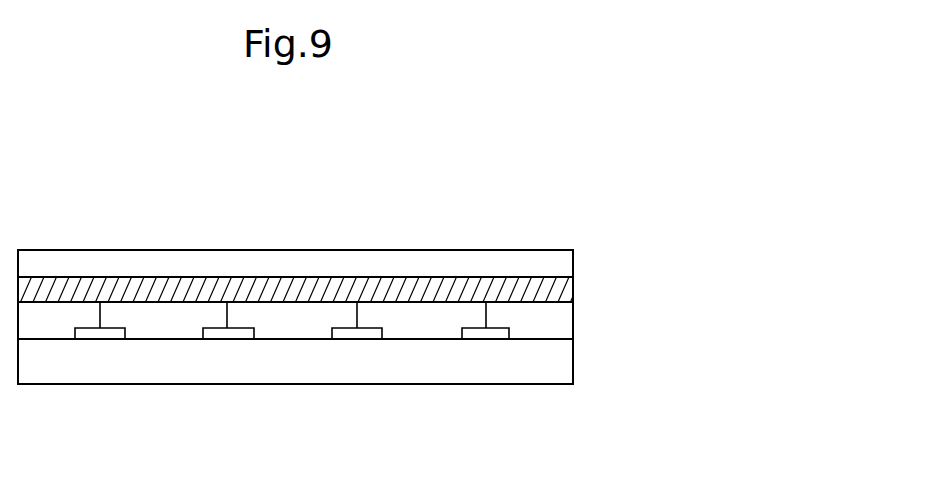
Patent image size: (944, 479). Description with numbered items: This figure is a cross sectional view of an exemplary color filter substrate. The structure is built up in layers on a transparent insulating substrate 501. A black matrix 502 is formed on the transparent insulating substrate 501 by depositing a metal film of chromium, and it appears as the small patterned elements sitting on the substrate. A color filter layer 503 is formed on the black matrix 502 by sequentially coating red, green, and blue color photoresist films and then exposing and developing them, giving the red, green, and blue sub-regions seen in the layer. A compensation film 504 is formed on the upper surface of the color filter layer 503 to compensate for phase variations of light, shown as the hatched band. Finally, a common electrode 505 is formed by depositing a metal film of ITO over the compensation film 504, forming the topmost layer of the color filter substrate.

The transparent insulating substrate 501 is at (573, 362).
The black matrix 502 is at (485, 333).
The color filter layer 503 is at (565, 315).
The compensation film 504 is at (562, 287).
The common electrode 505 is at (538, 260).